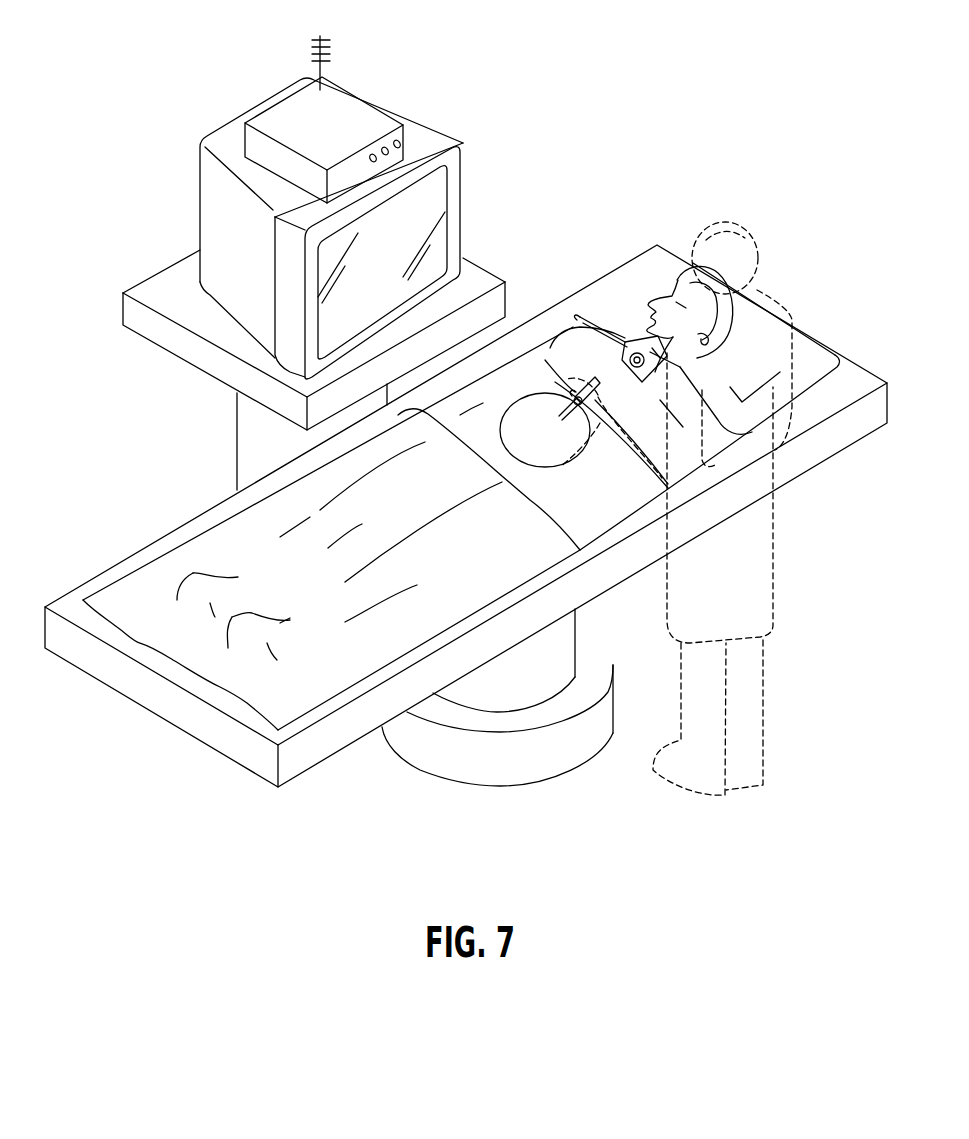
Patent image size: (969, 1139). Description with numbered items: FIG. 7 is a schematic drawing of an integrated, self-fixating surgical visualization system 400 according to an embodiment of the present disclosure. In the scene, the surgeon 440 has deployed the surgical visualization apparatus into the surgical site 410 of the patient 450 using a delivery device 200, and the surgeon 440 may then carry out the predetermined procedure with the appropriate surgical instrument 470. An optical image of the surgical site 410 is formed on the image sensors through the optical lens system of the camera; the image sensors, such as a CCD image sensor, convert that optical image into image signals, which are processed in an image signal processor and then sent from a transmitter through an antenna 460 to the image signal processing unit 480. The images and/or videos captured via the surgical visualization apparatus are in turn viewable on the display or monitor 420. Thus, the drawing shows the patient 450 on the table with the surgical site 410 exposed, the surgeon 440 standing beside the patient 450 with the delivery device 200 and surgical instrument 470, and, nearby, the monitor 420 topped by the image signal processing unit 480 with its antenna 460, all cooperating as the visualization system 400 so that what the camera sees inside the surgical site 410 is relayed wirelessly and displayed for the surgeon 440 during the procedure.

The surgical system 400 is at (692, 54).
The surgical site 410 is at (542, 417).
The monitor 420 is at (463, 173).
The surgeon 440 is at (776, 528).
The patient 450 is at (685, 280).
The antenna 460 is at (320, 36).
The surgical instrument 470 is at (573, 398).
The image signal processing unit 480 is at (350, 105).
The delivery device 200 is at (637, 342).